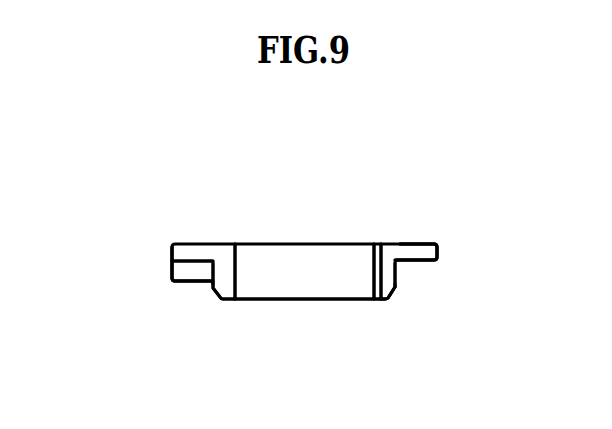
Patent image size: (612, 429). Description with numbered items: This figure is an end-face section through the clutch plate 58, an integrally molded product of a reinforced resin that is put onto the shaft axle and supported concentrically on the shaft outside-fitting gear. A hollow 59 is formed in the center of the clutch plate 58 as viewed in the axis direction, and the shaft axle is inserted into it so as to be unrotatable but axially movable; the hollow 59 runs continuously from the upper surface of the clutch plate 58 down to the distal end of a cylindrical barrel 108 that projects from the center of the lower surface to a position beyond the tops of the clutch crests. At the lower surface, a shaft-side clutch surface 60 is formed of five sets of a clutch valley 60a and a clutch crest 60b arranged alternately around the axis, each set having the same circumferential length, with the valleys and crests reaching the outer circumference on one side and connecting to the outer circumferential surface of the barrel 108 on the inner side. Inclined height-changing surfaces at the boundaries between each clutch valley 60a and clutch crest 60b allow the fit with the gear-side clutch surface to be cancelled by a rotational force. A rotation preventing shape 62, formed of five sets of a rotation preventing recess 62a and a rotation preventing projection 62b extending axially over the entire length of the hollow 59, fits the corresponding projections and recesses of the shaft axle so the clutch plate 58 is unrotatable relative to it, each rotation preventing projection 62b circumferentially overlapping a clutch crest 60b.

The clutch plate 58 is at (457, 173).
The hollow 59 is at (295, 273).
The shaft-side clutch surface 60 is at (82, 260).
The clutch valley 60a is at (190, 263).
The clutch crest 60b is at (193, 283).
The rotation preventing shape 62 is at (377, 138).
The rotation preventing recess 62a is at (372, 283).
The rotation preventing projection 62b is at (372, 265).
The barrel 108 is at (388, 280).